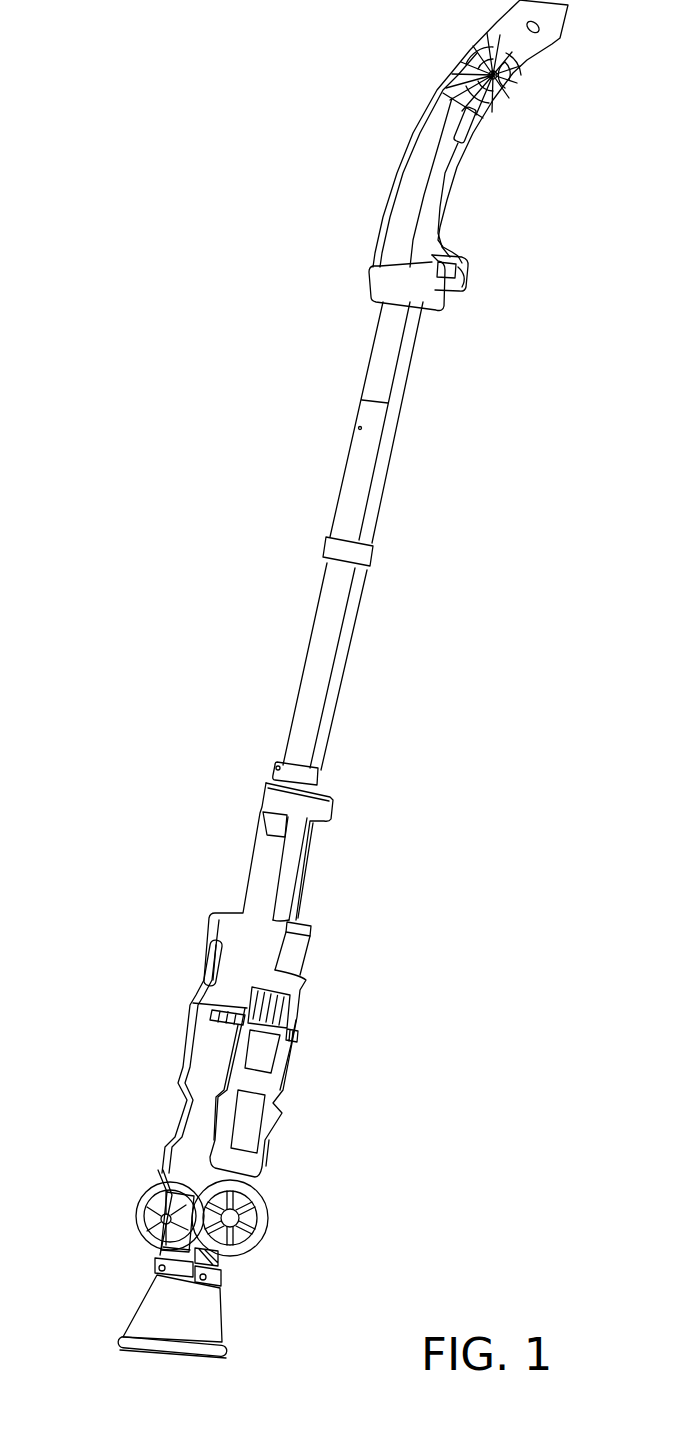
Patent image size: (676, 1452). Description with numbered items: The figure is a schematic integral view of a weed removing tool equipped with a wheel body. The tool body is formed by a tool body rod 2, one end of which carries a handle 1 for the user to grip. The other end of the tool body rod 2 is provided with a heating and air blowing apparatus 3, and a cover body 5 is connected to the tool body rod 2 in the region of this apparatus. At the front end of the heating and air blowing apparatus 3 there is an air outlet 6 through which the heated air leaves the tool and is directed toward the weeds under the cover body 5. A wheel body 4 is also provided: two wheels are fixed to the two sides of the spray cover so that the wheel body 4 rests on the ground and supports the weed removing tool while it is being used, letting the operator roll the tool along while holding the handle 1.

The handle 1 is at (444, 122).
The tool body rod 2 is at (333, 612).
The heating and air blowing apparatus 3 is at (260, 1053).
The wheel body 4 is at (163, 1260).
The cover body 5 is at (200, 1313).
The air outlet 6 is at (200, 1274).